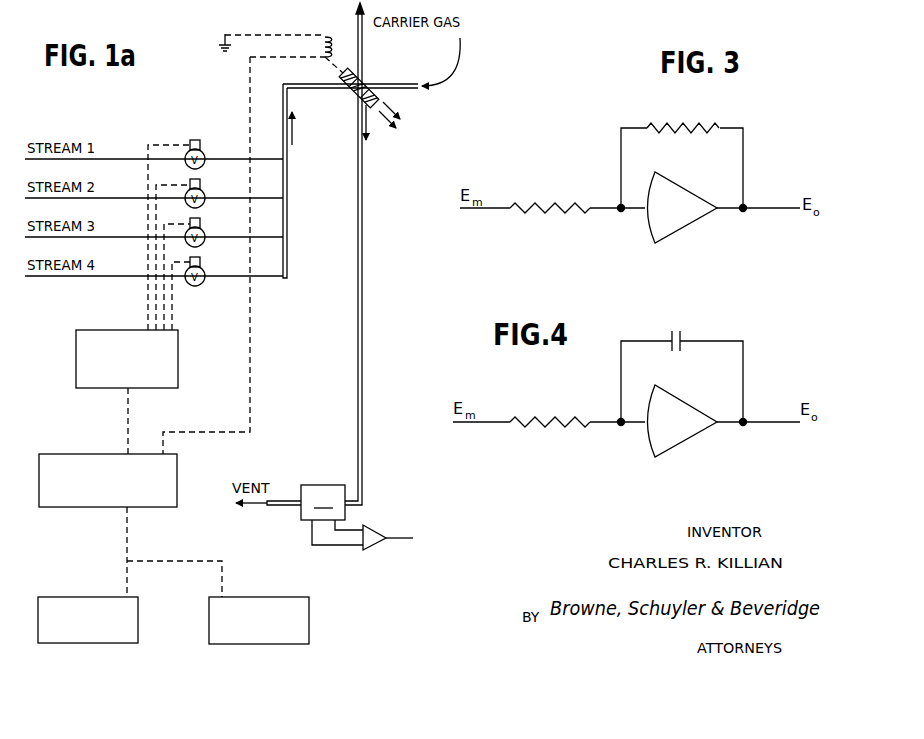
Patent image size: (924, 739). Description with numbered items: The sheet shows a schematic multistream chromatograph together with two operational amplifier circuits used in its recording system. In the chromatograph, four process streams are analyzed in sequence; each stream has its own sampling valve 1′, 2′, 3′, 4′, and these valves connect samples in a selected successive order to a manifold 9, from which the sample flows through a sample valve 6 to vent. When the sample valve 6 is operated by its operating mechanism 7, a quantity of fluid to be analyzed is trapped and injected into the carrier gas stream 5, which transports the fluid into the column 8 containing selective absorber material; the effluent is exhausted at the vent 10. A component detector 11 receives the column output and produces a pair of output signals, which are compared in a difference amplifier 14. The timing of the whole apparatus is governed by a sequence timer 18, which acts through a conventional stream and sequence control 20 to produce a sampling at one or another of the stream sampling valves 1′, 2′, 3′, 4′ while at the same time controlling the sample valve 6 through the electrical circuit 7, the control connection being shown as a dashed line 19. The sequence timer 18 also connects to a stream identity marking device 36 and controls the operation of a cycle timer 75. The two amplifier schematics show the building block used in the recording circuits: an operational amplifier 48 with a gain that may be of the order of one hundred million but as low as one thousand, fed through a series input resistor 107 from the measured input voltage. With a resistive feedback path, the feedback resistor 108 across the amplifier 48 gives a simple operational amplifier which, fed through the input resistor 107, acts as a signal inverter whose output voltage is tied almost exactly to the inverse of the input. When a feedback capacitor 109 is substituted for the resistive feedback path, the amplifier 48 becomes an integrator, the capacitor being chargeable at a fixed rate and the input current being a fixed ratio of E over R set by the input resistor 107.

In FIG. 1a, the sampling valve 1′ is at (205, 156).
In FIG. 1a, the sampling valve 2′ is at (205, 195).
In FIG. 1a, the sampling valve 3′ is at (205, 234).
In FIG. 1a, the sampling valve 4′ is at (205, 272).
In FIG. 1a, the carrier gas stream 5 is at (393, 93).
In FIG. 1a, the sample valve 6 is at (370, 82).
In FIG. 1a, the operating mechanism 7 is at (330, 36).
In FIG. 1a, the column 8 is at (363, 218).
In FIG. 1a, the manifold 9 is at (288, 258).
In FIG. 1a, the vent 10 is at (288, 508).
In FIG. 1a, the component detector 11 is at (323, 502).
In FIG. 1a, the difference amplifier 14 is at (373, 546).
In FIG. 1a, the sequence timer 18 is at (178, 488).
In FIG. 1a, the control line 19 is at (221, 433).
In FIG. 1a, the sequence control 20 is at (172, 391).
In FIG. 1a, the stream identity marking device 36 is at (100, 597).
In FIG. 1a, the cycle timer 75 is at (297, 597).
In FIG. 3, the operational amplifier 48 is at (678, 227).
In FIG. 4, the operational amplifier 48 is at (688, 440).
In FIG. 3, the series input resistor 107 is at (572, 200).
In FIG. 4, the series input resistor 107 is at (552, 418).
In FIG. 3, the feedback resistor 108 is at (697, 123).
In FIG. 4, the feedback capacitor 109 is at (684, 333).